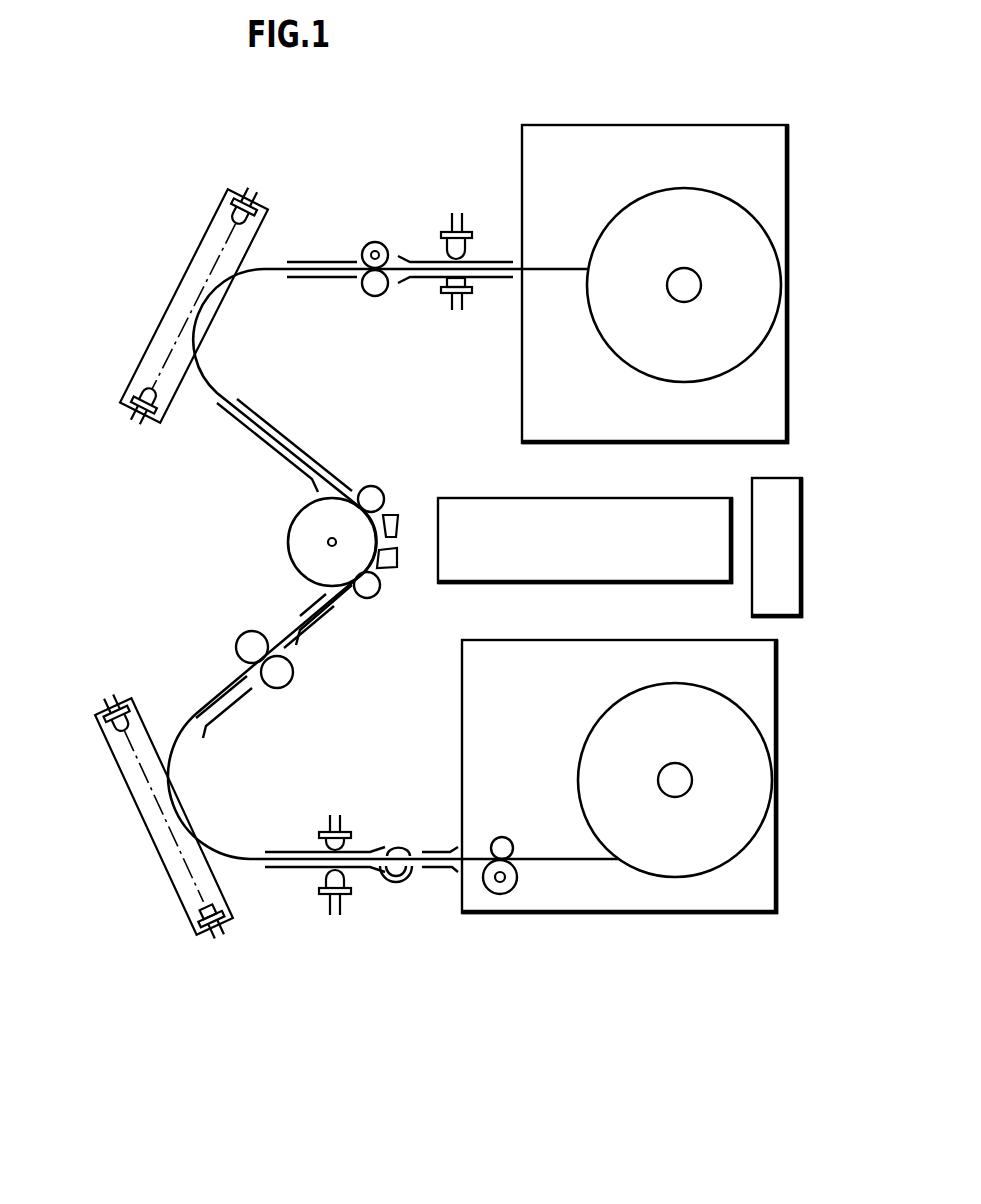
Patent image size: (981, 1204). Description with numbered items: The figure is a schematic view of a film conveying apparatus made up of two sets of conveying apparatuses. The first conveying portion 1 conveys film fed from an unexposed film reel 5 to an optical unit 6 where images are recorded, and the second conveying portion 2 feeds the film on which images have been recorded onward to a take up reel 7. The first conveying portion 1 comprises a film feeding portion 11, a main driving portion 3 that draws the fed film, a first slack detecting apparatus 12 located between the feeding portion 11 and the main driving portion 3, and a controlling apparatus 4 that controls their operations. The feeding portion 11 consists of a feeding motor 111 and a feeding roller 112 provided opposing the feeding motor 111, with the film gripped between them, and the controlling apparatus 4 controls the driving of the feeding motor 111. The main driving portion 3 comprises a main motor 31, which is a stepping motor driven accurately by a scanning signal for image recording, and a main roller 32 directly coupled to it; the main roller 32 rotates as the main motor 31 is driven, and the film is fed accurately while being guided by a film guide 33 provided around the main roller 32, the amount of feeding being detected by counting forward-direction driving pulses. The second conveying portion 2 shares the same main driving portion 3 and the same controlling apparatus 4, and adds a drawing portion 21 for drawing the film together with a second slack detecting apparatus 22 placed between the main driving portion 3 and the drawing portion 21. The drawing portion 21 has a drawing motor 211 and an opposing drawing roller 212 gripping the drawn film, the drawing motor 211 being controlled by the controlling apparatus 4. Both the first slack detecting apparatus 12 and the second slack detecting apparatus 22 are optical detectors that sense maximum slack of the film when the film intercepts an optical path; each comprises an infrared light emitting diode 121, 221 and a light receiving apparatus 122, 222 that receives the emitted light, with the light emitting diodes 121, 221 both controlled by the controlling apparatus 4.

The first conveying portion 1 is at (297, 950).
The second conveying portion 2 is at (390, 173).
The main driving portion 3 is at (260, 535).
The controlling apparatus 4 is at (776, 490).
The unexposed film reel 5 is at (742, 795).
The optical unit 6 is at (485, 572).
The take up reel 7 is at (753, 216).
The film feeding portion 11 is at (475, 877).
The first slack detecting apparatus 12 is at (173, 865).
The drawing portion 21 is at (400, 249).
The second slack detecting apparatus 22 is at (197, 268).
The main motor 31 is at (327, 540).
The main roller 32 is at (308, 557).
The film guide 33 is at (394, 513).
The feeding motor 111 is at (493, 846).
The feeding roller 112 is at (500, 895).
The light emitting diode 121 is at (118, 733).
The light receiving apparatus 122 is at (193, 912).
The drawing motor 211 is at (373, 297).
The drawing roller 212 is at (357, 270).
The light emitting diode 221 is at (130, 392).
The light receiving apparatus 222 is at (232, 188).